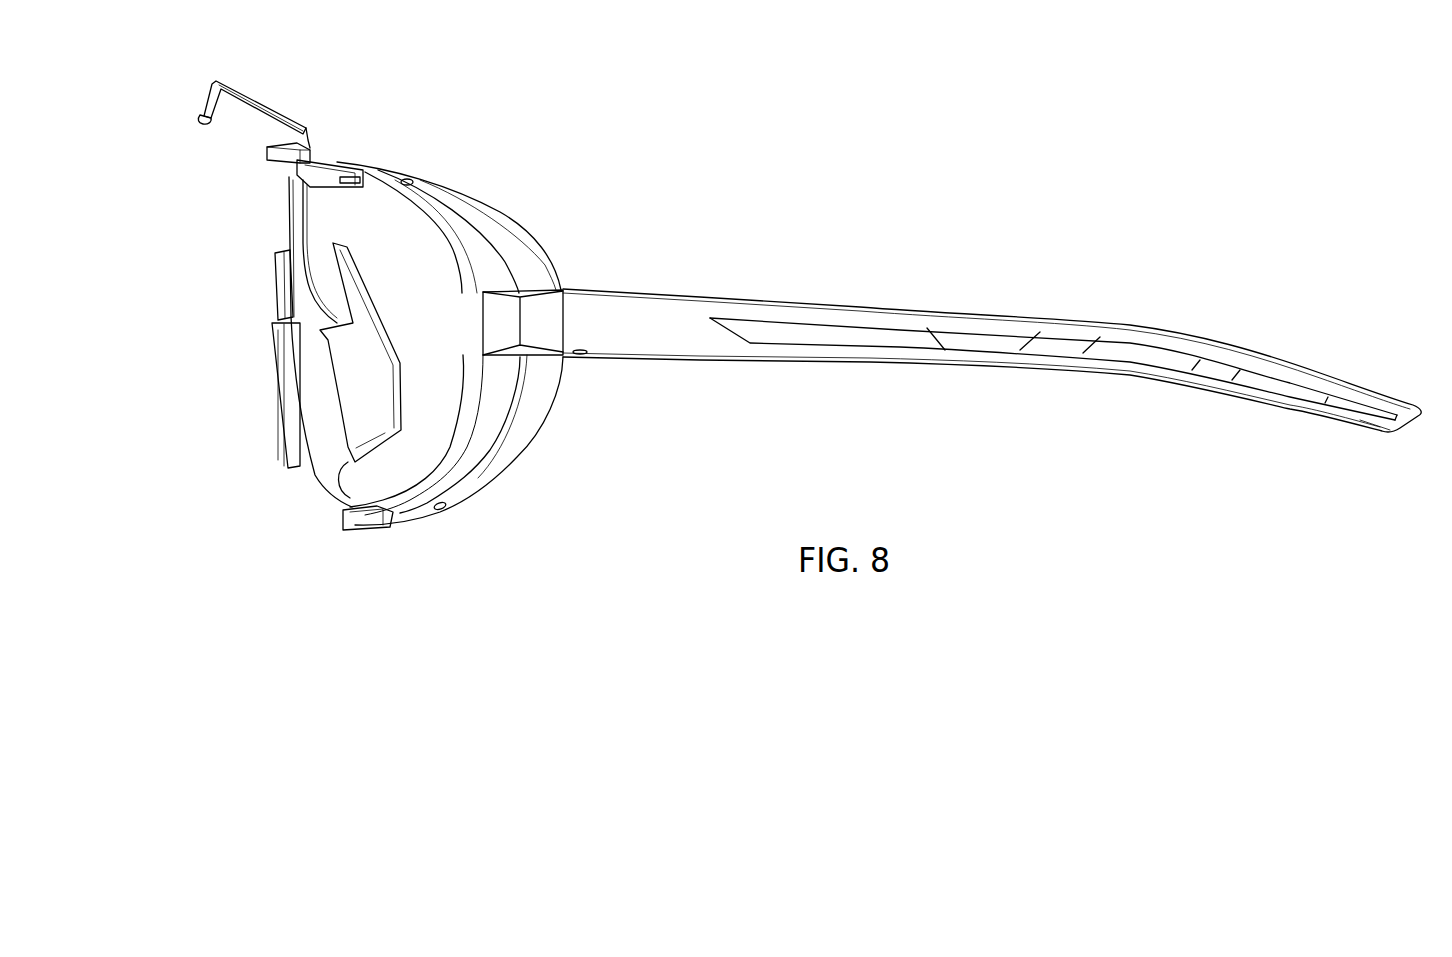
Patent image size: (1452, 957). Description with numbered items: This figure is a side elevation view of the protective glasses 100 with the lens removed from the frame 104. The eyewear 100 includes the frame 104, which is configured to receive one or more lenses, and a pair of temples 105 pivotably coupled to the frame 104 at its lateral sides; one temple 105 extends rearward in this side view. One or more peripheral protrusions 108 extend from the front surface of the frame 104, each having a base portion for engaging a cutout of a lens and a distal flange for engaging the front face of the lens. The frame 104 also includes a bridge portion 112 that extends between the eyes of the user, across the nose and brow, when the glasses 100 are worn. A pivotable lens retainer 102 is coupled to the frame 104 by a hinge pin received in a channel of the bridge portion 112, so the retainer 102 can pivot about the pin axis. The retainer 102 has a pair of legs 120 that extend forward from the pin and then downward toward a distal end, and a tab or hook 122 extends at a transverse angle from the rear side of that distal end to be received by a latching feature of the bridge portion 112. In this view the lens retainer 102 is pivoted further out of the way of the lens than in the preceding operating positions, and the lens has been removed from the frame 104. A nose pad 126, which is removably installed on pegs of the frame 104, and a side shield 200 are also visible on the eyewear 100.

The glasses 100 is at (1226, 203).
The lens retainer 102 is at (293, 80).
The frame 104 is at (440, 238).
The temples 105 is at (890, 307).
The peripheral protrusions 108 is at (317, 173).
The bridge portion 112 is at (277, 228).
The legs 120 is at (243, 95).
The hook 122 is at (209, 105).
The nose pad 126 is at (403, 367).
The side shields 200 is at (501, 210).